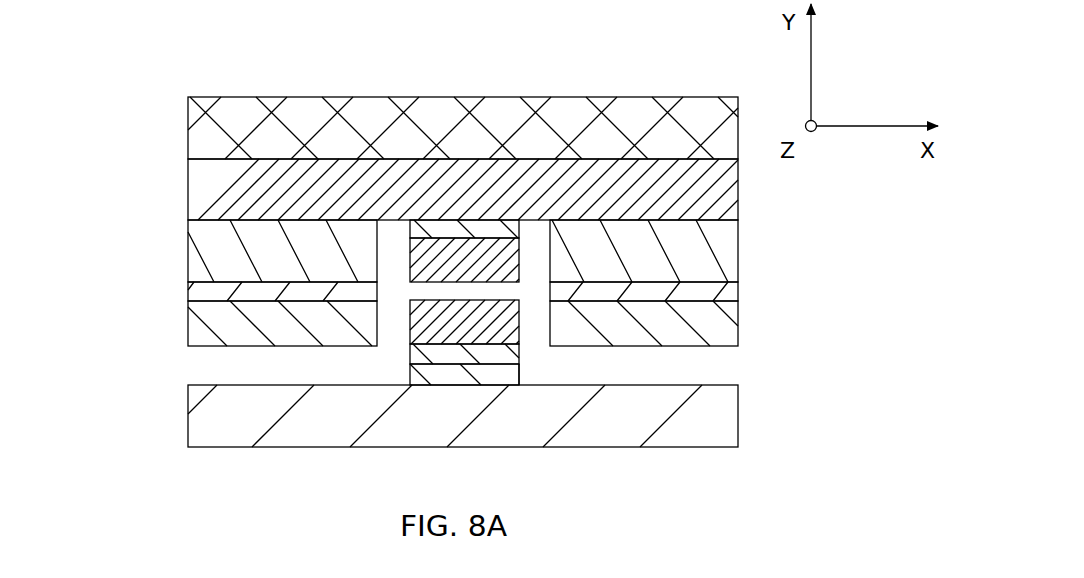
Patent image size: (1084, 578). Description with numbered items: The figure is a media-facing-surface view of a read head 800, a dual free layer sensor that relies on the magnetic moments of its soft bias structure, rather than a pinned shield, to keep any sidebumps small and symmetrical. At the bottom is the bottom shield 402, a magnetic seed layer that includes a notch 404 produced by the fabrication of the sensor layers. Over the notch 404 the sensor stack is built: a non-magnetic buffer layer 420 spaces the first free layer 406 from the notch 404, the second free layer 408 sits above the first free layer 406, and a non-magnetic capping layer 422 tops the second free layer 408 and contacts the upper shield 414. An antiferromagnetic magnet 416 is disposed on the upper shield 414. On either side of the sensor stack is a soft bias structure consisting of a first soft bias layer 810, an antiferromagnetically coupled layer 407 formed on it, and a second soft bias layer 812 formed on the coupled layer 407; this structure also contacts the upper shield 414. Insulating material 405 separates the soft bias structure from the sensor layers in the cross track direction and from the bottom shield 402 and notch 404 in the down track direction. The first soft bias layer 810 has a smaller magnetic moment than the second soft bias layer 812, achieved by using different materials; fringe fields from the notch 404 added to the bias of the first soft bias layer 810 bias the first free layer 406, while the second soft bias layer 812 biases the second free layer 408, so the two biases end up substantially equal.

The read head 800 is at (140, 57).
The antiferromagnetic magnet 416 is at (477, 134).
The upper shield 414 is at (477, 206).
The second soft bias layer 812 is at (302, 266).
The antiferromagnetically coupled (AFC) layer 407 is at (187, 292).
The first soft bias layer 810 is at (302, 338).
The capping layer 422 is at (408, 229).
The second free layer 408 is at (479, 276).
The first free layer 406 is at (479, 339).
The non-magnetic buffer layer 420 is at (409, 352).
The bottom shield 402 is at (439, 431).
The insulating material 405 is at (296, 374).
The notch 404 is at (521, 374).